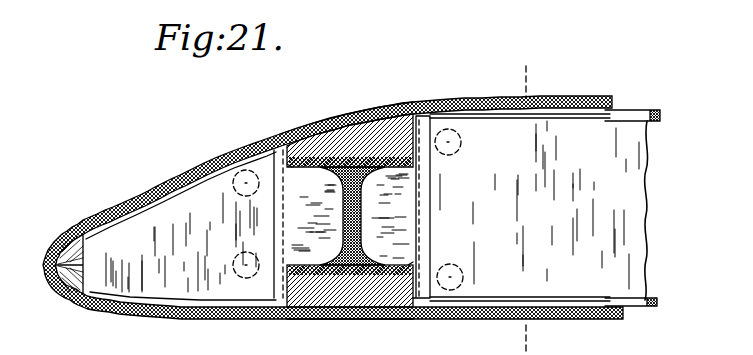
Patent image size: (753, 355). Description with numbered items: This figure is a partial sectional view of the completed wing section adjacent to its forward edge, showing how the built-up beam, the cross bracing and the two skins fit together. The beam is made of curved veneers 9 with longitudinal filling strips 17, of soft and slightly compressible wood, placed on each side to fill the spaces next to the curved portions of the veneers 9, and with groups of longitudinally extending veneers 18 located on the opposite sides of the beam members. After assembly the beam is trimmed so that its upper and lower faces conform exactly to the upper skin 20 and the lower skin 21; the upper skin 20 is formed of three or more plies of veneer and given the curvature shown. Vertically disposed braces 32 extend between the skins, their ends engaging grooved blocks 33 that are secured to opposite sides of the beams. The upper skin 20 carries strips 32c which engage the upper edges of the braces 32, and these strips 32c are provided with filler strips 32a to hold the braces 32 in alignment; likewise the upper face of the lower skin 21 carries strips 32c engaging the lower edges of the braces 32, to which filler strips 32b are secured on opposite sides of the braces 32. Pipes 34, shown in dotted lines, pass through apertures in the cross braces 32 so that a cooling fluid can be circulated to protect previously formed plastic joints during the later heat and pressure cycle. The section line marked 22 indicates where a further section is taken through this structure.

The veneers 9 is at (287, 165).
The longitudinal filling strips 17 is at (350, 170).
The longitudinally extending veneers 18 is at (363, 132).
The upper skin 20 is at (386, 108).
The lower skin 21 is at (395, 315).
The section line 22 is at (518, 76).
The braces 32 is at (210, 287).
The filler strips 32a is at (155, 180).
The filler strips 32b is at (157, 297).
The strips 32c is at (625, 112).
The grooved blocks 33 is at (290, 233).
The pipes 34 is at (233, 186).